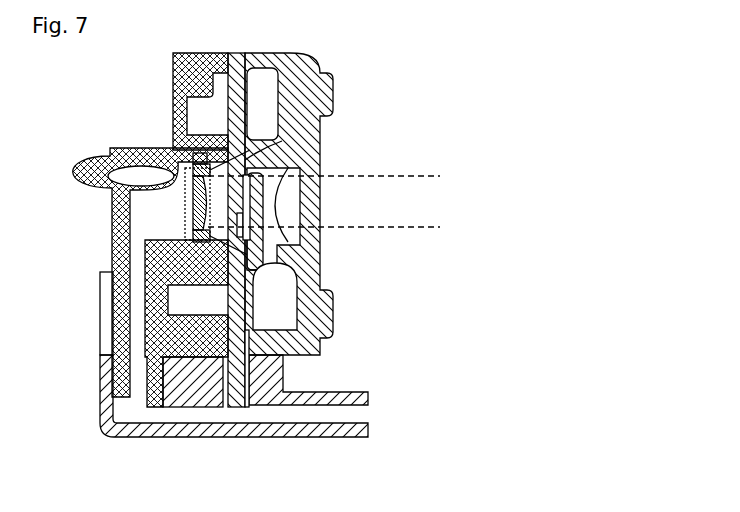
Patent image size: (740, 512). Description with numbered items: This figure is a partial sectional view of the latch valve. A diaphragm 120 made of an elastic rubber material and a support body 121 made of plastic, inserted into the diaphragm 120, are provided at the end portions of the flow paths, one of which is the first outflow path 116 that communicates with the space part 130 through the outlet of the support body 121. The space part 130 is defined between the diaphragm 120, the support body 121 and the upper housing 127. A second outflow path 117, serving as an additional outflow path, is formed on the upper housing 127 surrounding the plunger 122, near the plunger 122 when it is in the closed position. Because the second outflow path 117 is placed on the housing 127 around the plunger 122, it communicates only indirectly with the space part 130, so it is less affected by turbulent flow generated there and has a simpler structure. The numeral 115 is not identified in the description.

The base plate 115 is at (308, 417).
The first outflow path 116 is at (133, 364).
The second outflow path 117 is at (245, 282).
The diaphragm 120 is at (173, 122).
The support body 121 is at (172, 152).
The plunger 122 is at (338, 228).
The upper housing 127 is at (292, 86).
The space part 130 is at (297, 138).